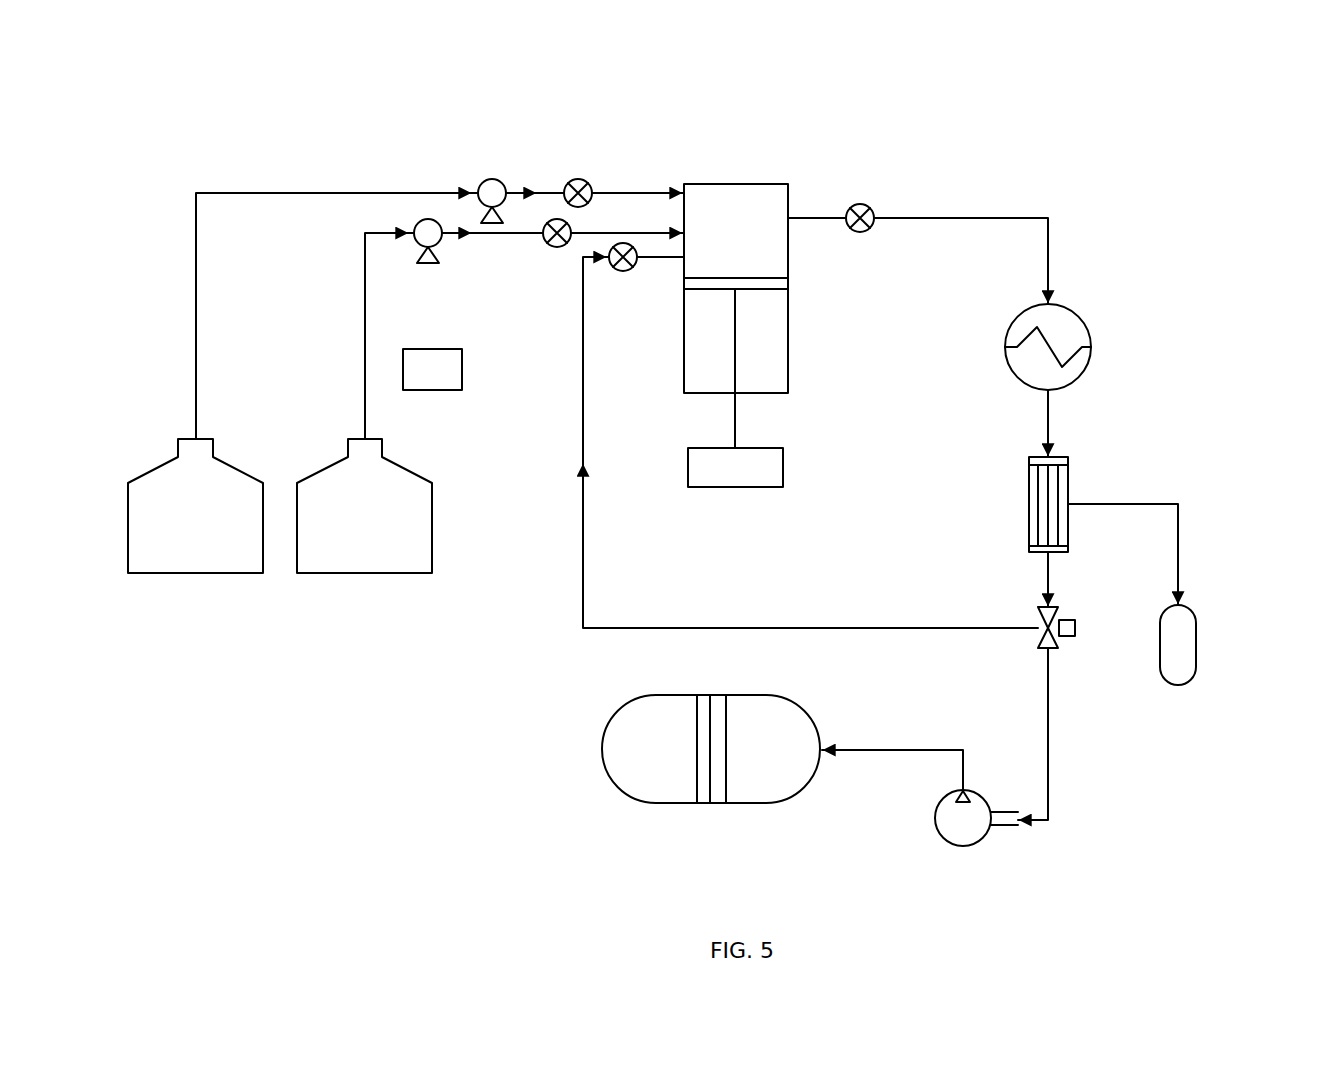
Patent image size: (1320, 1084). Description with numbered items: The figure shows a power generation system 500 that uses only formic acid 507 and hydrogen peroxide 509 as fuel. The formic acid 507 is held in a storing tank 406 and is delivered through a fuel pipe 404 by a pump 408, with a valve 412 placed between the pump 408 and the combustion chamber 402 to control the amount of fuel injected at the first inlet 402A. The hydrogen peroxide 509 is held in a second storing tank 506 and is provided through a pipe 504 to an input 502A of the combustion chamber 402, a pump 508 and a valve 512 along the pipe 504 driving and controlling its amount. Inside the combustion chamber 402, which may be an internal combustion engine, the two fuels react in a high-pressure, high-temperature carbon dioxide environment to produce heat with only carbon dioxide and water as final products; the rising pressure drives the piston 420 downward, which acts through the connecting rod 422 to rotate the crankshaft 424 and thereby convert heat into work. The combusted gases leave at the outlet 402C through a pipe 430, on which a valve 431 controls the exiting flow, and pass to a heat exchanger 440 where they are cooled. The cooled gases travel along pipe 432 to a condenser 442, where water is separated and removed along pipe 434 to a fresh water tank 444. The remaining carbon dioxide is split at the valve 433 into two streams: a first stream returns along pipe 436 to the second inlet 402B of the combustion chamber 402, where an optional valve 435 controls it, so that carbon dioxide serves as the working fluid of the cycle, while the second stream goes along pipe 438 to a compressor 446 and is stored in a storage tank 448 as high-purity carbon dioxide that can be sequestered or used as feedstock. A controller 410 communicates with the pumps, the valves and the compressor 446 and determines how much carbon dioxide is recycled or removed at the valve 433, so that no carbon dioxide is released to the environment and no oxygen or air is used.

The power generation system 500 is at (1170, 73).
The fuel pipe 404 is at (285, 192).
The pipe 504 is at (364, 293).
The pump 508 is at (428, 219).
The pump 408 is at (492, 179).
The valve 412 is at (578, 179).
The valve 512 is at (557, 247).
The valve 435 is at (623, 271).
The valve 431 is at (861, 204).
The combustion chamber 402 is at (735, 184).
The first inlet 402A is at (681, 232).
The second inlet 402B is at (677, 259).
The outlet 402C is at (797, 216).
The input 502A is at (663, 191).
The piston 420 is at (758, 289).
The connecting rod 422 is at (735, 420).
The crankshaft 424 is at (735, 487).
The controller 410 is at (433, 390).
The storing tank 406 is at (237, 467).
The second storing tank 506 is at (432, 527).
The formic acid 507 is at (175, 541).
The hydrogen peroxide 509 is at (345, 541).
The pipe 430 is at (930, 217).
The heat exchanger 440 is at (1092, 347).
The pipe 432 is at (1050, 418).
The condenser 442 is at (1029, 505).
The pipe 434 is at (1178, 549).
The fresh water tank 444 is at (1196, 648).
The valve 433 is at (1040, 632).
The pipe 436 is at (583, 578).
The pipe 438 is at (1048, 776).
The compressor 446 is at (935, 818).
The storage tank 448 is at (750, 695).